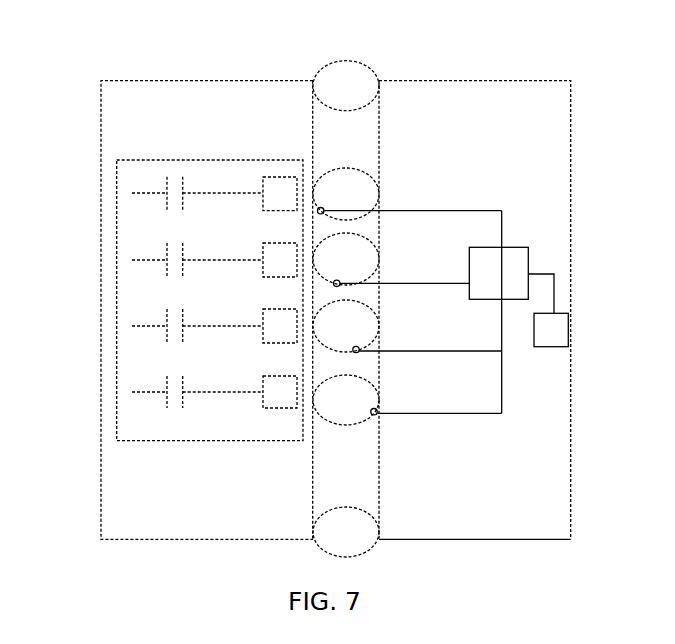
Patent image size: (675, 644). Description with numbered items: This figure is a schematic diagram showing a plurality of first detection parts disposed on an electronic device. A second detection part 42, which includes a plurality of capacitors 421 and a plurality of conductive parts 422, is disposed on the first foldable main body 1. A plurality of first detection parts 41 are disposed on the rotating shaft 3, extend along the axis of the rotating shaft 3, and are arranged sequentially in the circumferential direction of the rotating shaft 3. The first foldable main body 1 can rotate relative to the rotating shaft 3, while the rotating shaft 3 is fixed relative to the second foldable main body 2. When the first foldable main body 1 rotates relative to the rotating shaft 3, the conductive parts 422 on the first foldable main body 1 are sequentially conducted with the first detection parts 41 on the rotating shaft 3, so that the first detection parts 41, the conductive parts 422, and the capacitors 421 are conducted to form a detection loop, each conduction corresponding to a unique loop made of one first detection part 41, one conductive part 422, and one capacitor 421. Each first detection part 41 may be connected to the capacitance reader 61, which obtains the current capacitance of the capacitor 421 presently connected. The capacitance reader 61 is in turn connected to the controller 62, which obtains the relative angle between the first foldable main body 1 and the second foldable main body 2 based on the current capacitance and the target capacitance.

The first foldable main body 1 is at (133, 498).
The second foldable main body 2 is at (540, 485).
The rotating shaft 3 is at (368, 135).
The first detection parts 41 is at (340, 280).
The second detection part 42 is at (183, 158).
The capacitors 421 is at (164, 187).
The conductive parts 422 is at (277, 195).
The capacitance reader 61 is at (517, 247).
The controller 62 is at (553, 348).